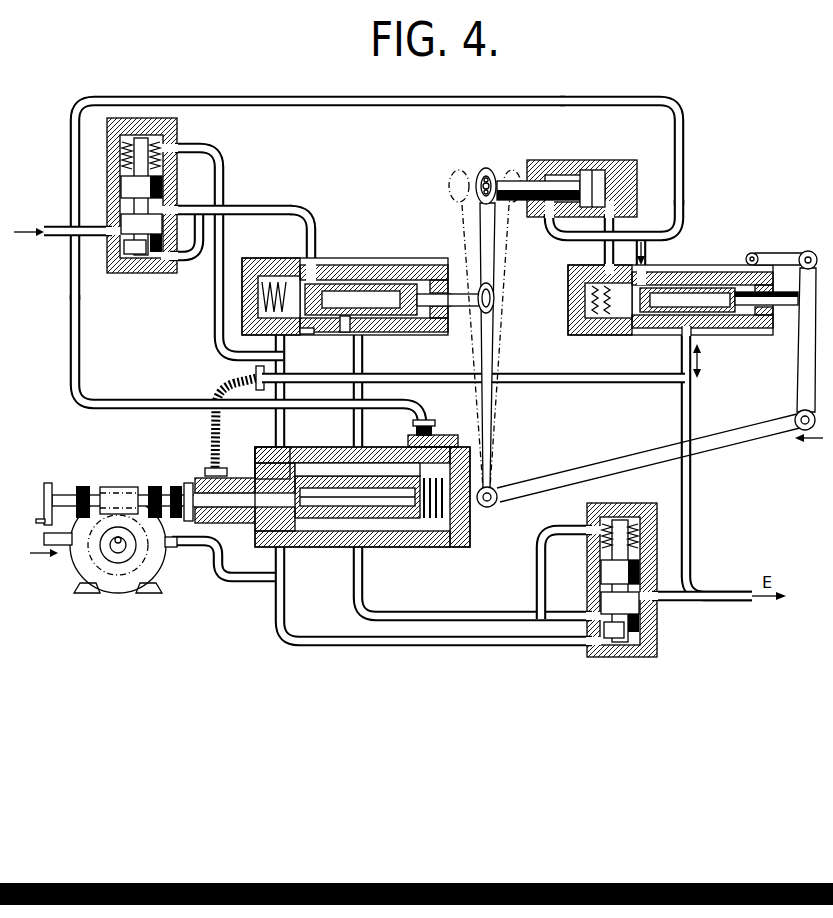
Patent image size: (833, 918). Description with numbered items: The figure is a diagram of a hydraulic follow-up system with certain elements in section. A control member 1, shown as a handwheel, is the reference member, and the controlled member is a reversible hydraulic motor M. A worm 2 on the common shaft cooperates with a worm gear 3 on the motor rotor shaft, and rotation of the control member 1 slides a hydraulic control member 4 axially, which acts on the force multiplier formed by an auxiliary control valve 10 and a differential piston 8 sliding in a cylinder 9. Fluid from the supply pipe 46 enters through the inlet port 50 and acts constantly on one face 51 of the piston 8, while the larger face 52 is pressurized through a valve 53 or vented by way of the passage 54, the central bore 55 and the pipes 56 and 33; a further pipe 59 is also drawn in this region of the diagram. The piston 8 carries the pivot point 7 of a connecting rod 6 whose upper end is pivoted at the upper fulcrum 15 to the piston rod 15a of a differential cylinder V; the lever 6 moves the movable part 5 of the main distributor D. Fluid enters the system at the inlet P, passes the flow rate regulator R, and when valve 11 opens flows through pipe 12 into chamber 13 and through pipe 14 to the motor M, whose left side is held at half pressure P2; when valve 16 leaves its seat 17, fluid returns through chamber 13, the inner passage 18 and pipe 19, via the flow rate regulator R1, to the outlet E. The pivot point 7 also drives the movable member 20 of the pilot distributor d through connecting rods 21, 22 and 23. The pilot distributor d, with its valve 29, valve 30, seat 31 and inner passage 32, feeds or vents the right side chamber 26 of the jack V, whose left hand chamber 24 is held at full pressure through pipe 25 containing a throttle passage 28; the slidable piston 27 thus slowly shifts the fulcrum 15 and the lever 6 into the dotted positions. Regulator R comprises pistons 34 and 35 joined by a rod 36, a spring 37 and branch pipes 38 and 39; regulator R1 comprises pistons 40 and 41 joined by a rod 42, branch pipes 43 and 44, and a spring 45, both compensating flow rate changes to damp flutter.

The control member 1 is at (48, 483).
The worm 2 is at (110, 487).
The worm gear 3 is at (150, 556).
The hydraulic control member 4 is at (228, 524).
The movable part 5 is at (455, 308).
The connecting rod 6 is at (487, 322).
The pivot point 7 is at (491, 491).
The force amplifier differential piston 8 is at (458, 541).
The cylinder 9 is at (349, 490).
The auxiliary control valve 10 is at (257, 470).
The valve 11 is at (290, 276).
The pipe 12 is at (309, 234).
The chamber 13 is at (305, 335).
The pipe 14 is at (285, 421).
The upper fulcrum 15 is at (483, 169).
The piston rod 15a is at (518, 200).
The valve 16 is at (405, 270).
The seat 17 is at (364, 283).
The inner passage 18 is at (343, 333).
The pipe 19 is at (442, 612).
The movable member 20 is at (783, 306).
The connecting rod 21 is at (567, 472).
The connecting rod 22 is at (784, 335).
The connecting rod 23 is at (770, 255).
The left hand chamber 24 is at (560, 170).
The pipe 25 is at (511, 105).
The right side chamber 26 is at (610, 172).
The slidable piston 27 is at (560, 240).
The throttle passage 28 is at (683, 143).
The valve 29 is at (625, 319).
The valve 30 is at (683, 300).
The seat 31 is at (708, 272).
The inner passage 32 is at (693, 294).
The pipe 33 is at (690, 513).
The piston 34 is at (148, 205).
The piston 35 is at (163, 195).
The rod 36 is at (170, 208).
The spring 37 is at (168, 168).
The branch pipe 38 is at (180, 259).
The branch pipe 39 is at (216, 327).
The piston 40 is at (604, 592).
The piston 41 is at (605, 578).
The rod 42 is at (605, 601).
The branch pipe 43 is at (500, 640).
The branch pipe 44 is at (560, 528).
The spring 45 is at (592, 548).
The supply pipe 46 is at (159, 404).
The inlet port 50 is at (432, 430).
The face 51 is at (441, 547).
The face 52 is at (390, 447).
The valve 53 is at (448, 446).
The passage 54 is at (412, 548).
The central bore 55 is at (404, 532).
The pipe 56 is at (208, 434).
The pipe 59 is at (540, 375).
The inlet P is at (63, 221).
The pressure P2 is at (44, 561).
The flow rate regulator R is at (136, 282).
The main distributor D is at (346, 288).
The differential cylinder V is at (567, 174).
The controlled member M is at (113, 559).
The outlet E is at (768, 585).
The pilot control valve d is at (670, 342).
The flow rate regulator R1 is at (660, 643).